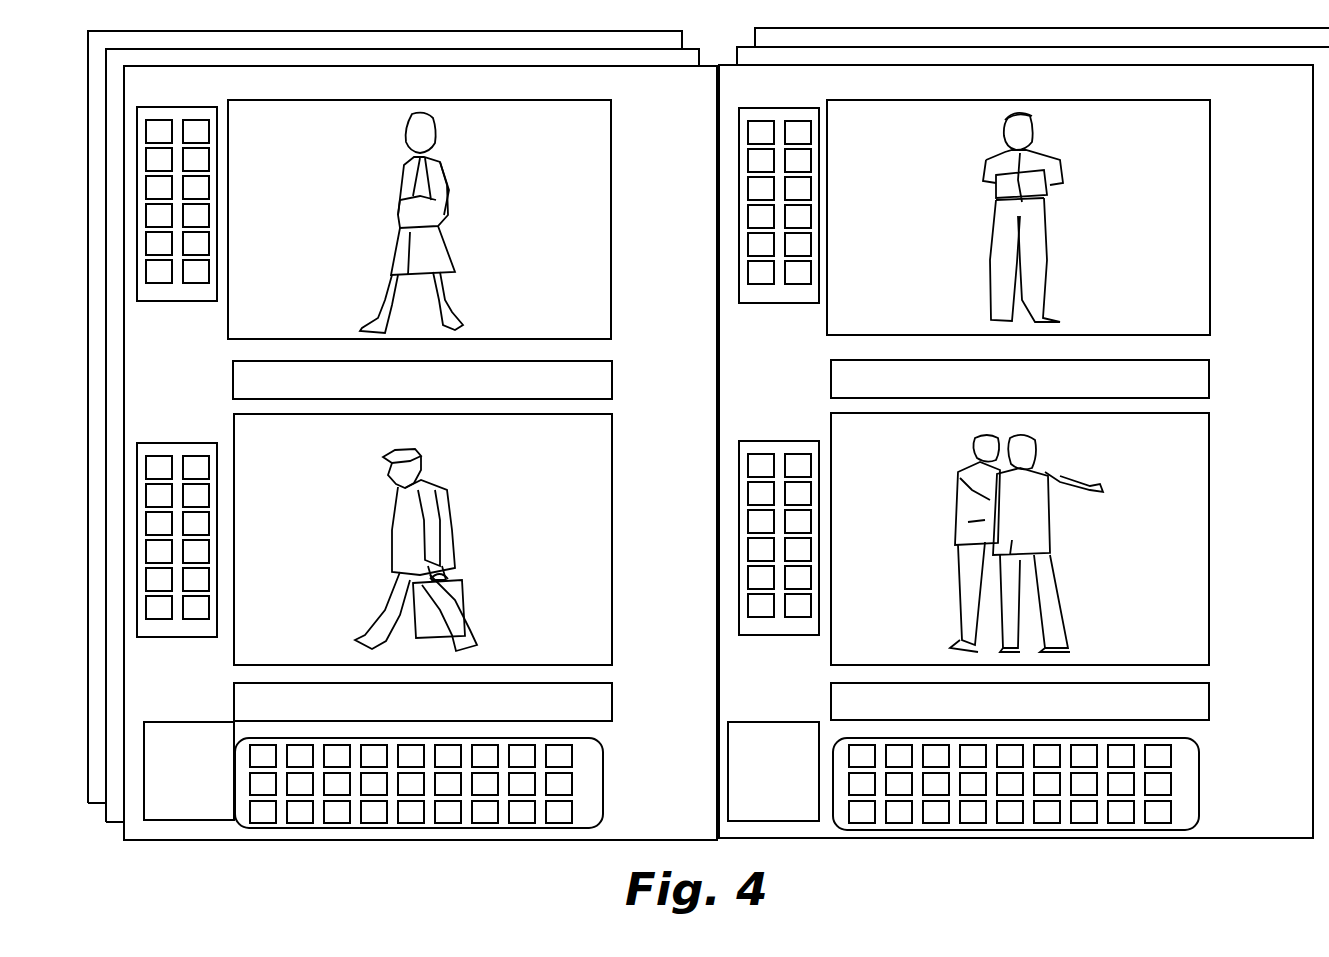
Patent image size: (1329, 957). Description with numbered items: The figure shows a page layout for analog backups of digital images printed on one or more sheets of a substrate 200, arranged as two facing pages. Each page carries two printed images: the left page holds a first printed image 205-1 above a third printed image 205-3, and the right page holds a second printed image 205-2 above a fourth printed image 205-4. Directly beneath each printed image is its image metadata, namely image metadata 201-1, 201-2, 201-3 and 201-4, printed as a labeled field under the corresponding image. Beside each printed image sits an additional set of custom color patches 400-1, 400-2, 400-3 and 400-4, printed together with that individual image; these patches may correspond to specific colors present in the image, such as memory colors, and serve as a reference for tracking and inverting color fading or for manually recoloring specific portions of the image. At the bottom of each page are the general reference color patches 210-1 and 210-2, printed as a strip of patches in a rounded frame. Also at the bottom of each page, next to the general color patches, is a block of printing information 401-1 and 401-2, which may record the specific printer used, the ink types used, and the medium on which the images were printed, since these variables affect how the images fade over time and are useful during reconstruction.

The substrate 200 is at (1273, 429).
The image metadata 201-1 is at (612, 382).
The image metadata 201-2 is at (1209, 382).
The image metadata 201-3 is at (612, 697).
The image metadata 201-4 is at (1209, 697).
The printed image 205-1 is at (611, 174).
The printed image 205-2 is at (1210, 209).
The printed image 205-3 is at (612, 499).
The printed image 205-4 is at (1209, 519).
The reference color patches 210-1 is at (603, 786).
The reference color patches 210-2 is at (1199, 786).
The custom color patches 400-1 is at (151, 301).
The custom color patches 400-2 is at (753, 303).
The custom color patches 400-3 is at (151, 637).
The custom color patches 400-4 is at (753, 635).
The printing information 401-1 is at (183, 722).
The printing information 401-2 is at (768, 722).